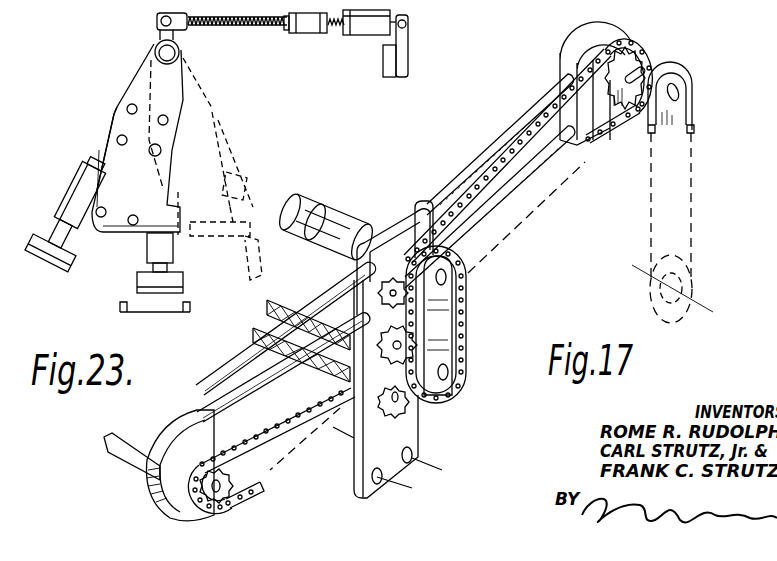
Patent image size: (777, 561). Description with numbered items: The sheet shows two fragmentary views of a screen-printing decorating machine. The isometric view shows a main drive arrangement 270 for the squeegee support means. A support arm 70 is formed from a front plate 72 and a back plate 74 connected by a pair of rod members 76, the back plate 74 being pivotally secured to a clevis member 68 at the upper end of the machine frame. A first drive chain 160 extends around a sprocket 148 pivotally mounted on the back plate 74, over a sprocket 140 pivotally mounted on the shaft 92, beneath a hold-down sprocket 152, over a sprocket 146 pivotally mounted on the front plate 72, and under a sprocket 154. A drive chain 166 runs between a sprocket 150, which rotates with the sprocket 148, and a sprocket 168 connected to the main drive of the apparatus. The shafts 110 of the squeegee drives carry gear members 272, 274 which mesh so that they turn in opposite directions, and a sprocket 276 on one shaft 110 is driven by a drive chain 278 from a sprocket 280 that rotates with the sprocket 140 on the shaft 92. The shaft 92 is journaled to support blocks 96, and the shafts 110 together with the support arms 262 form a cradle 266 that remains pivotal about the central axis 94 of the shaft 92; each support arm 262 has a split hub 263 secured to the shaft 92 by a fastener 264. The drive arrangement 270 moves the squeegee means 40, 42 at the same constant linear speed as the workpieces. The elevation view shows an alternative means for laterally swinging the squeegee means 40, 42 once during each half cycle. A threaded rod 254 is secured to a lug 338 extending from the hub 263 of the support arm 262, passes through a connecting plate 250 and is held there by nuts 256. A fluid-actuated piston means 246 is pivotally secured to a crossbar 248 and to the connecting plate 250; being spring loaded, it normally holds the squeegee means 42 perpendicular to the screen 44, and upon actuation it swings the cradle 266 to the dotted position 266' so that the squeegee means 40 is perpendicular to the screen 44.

In FIG. 23, the lug 338 is at (157, 24).
In FIG. 23, the split hub 263 is at (156, 48).
In FIG. 23, the shaft 92 is at (158, 57).
In FIG. 17, the shaft 92 is at (317, 205).
In FIG. 23, the cradle 266 is at (114, 138).
In FIG. 17, the cradle 266 is at (306, 453).
In FIG. 23, the support arms 262 is at (125, 122).
In FIG. 17, the support arms 262 is at (420, 443).
In FIG. 23, the cradle in swung position 266' is at (235, 169).
In FIG. 23, the squeegee means 40 is at (58, 217).
In FIG. 23, the squeegee means 42 is at (150, 248).
In FIG. 23, the screen 44 is at (138, 312).
In FIG. 23, the threaded rod 254 is at (262, 27).
In FIG. 23, the nuts 256 is at (331, 33).
In FIG. 23, the connecting plate 250 is at (341, 17).
In FIG. 23, the fluid-actuated piston means 246 is at (417, 38).
In FIG. 23, the crossbar 248 is at (383, 62).
In FIG. 17, the back plate 74 is at (588, 46).
In FIG. 17, the clevis members 68 is at (614, 44).
In FIG. 17, the sprocket 148 is at (637, 62).
In FIG. 17, the sprocket 150 is at (688, 72).
In FIG. 17, the drive chain 166 is at (693, 155).
In FIG. 17, the sprocket 168 is at (690, 274).
In FIG. 17, the first drive chain 160 is at (590, 146).
In FIG. 17, the support arm 70 is at (527, 103).
In FIG. 17, the rod members 76 is at (520, 165).
In FIG. 17, the sprocket 140 is at (428, 202).
In FIG. 17, the support blocks 96 is at (398, 225).
In FIG. 17, the fastener 264 is at (345, 212).
In FIG. 17, the central axis 94 is at (280, 200).
In FIG. 17, the hold-down sprocket 152 is at (352, 281).
In FIG. 17, the shafts 110 is at (273, 326).
In FIG. 17, the sprocket 280 is at (452, 268).
In FIG. 17, the drive chain 278 is at (455, 322).
In FIG. 17, the sprocket 154 is at (458, 346).
In FIG. 17, the sprocket 276 is at (471, 405).
In FIG. 17, the gear member 274 is at (409, 410).
In FIG. 17, the gear member 272 is at (384, 414).
In FIG. 17, the main drive arrangement 270 is at (355, 500).
In FIG. 17, the sprocket 146 is at (225, 513).
In FIG. 17, the front plate 72 is at (182, 432).